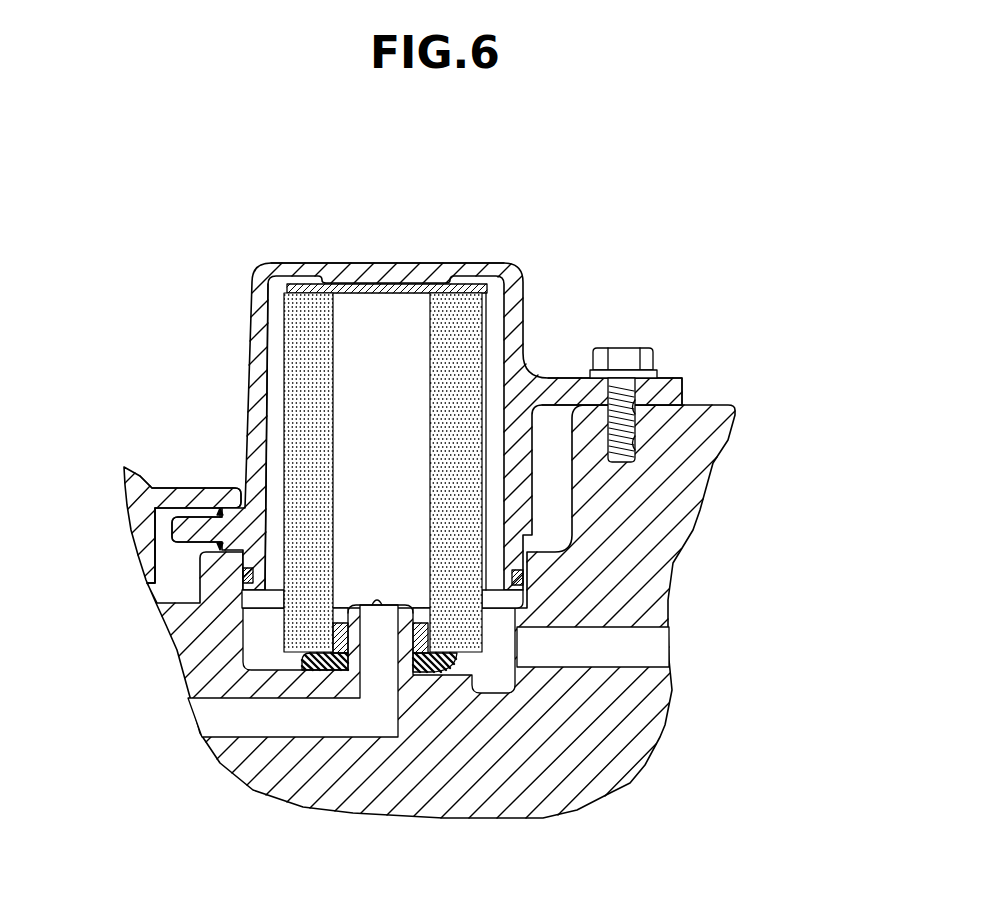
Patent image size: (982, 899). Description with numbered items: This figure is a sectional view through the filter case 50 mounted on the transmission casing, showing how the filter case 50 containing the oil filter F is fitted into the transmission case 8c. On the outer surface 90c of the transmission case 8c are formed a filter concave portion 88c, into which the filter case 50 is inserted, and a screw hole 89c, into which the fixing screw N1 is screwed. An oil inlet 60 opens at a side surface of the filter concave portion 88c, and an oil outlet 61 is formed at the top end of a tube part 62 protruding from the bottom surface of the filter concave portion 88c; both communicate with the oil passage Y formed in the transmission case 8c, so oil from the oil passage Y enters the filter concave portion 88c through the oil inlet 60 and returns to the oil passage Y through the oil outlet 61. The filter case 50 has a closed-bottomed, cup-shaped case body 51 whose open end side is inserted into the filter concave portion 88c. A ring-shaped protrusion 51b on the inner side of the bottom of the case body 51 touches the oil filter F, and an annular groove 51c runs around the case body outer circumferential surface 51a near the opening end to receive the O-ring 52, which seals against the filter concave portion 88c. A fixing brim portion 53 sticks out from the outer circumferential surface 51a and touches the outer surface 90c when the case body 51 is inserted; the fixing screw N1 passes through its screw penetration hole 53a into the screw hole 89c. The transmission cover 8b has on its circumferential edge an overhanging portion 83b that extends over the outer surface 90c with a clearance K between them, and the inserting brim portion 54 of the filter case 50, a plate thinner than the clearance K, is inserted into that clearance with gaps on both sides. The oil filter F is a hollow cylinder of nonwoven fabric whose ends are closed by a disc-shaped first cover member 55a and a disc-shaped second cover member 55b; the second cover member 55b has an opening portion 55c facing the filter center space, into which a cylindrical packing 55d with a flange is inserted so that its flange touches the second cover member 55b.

The filter case 50 is at (421, 514).
The case body 51 is at (376, 382).
The case body outer circumferential surface 51a is at (265, 400).
The ring-shaped protrusion 51b is at (307, 280).
The annular groove 51c is at (525, 583).
The O-ring 52 is at (240, 600).
The fixing brim portion 53 is at (575, 393).
The screw penetration hole 53a is at (637, 407).
The inserting brim portion 54 is at (178, 548).
The first cover member 55a is at (407, 285).
The second cover member 55b is at (296, 656).
The opening portion 55c is at (422, 645).
The cylindrical packing 55d is at (452, 668).
The oil inlet 60 is at (495, 658).
The oil outlet 61 is at (385, 612).
The tube part 62 is at (356, 652).
The transmission cover 8b is at (145, 532).
The transmission case 8c is at (570, 790).
The overhanging portion 83b is at (185, 492).
The filter concave portion 88c is at (262, 651).
The screw hole 89c is at (637, 443).
The outer surface 90c is at (422, 606).
The oil filter F is at (311, 341).
The clearance K is at (215, 513).
The fixing screw N1 is at (712, 391).
The oil passage Y is at (227, 722).